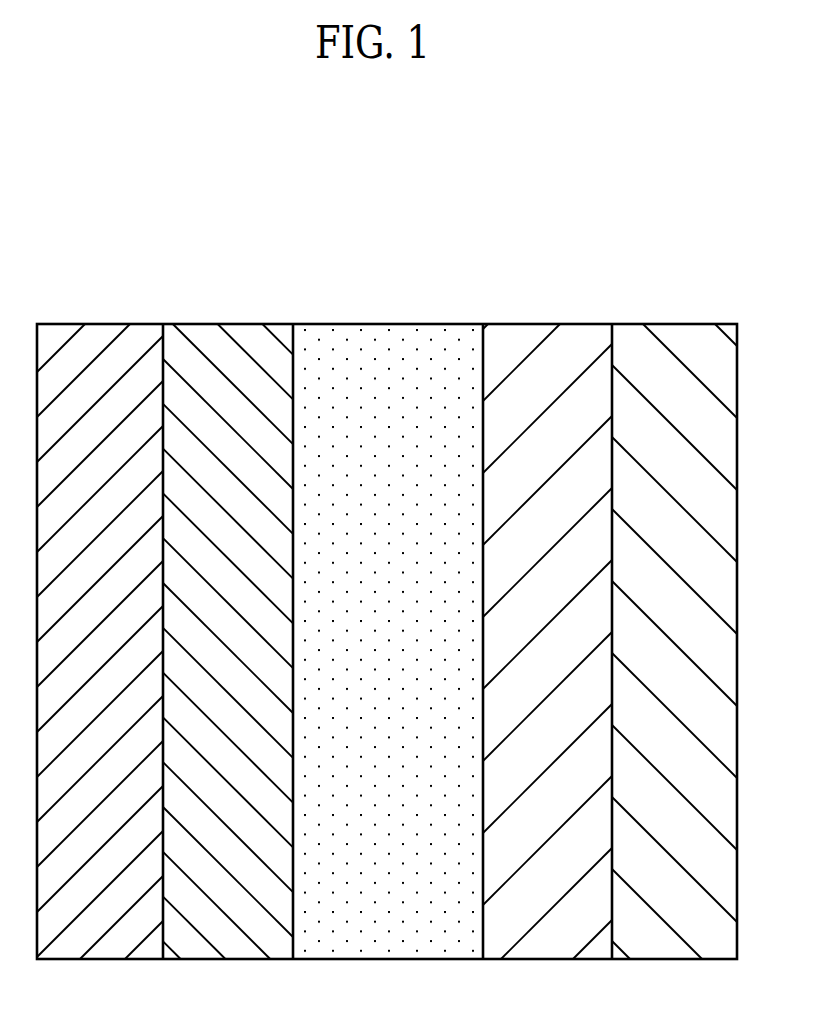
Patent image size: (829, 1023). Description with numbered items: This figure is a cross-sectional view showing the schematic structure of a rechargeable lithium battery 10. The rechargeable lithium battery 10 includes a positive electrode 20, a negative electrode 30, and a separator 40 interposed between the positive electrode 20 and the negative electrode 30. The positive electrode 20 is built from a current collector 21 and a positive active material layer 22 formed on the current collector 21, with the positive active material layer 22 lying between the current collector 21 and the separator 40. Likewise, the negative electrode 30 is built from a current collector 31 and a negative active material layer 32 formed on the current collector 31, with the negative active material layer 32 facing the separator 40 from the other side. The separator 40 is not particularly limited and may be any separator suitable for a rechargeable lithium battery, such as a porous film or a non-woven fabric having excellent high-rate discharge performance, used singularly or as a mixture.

The rechargeable lithium battery 10 is at (470, 174).
The positive electrode 20 is at (238, 250).
The current collector 21 is at (108, 333).
The positive active material layer 22 is at (220, 333).
The negative electrode 30 is at (683, 250).
The current collector 31 is at (668, 333).
The negative active material layer 32 is at (555, 333).
The separator 40 is at (387, 333).